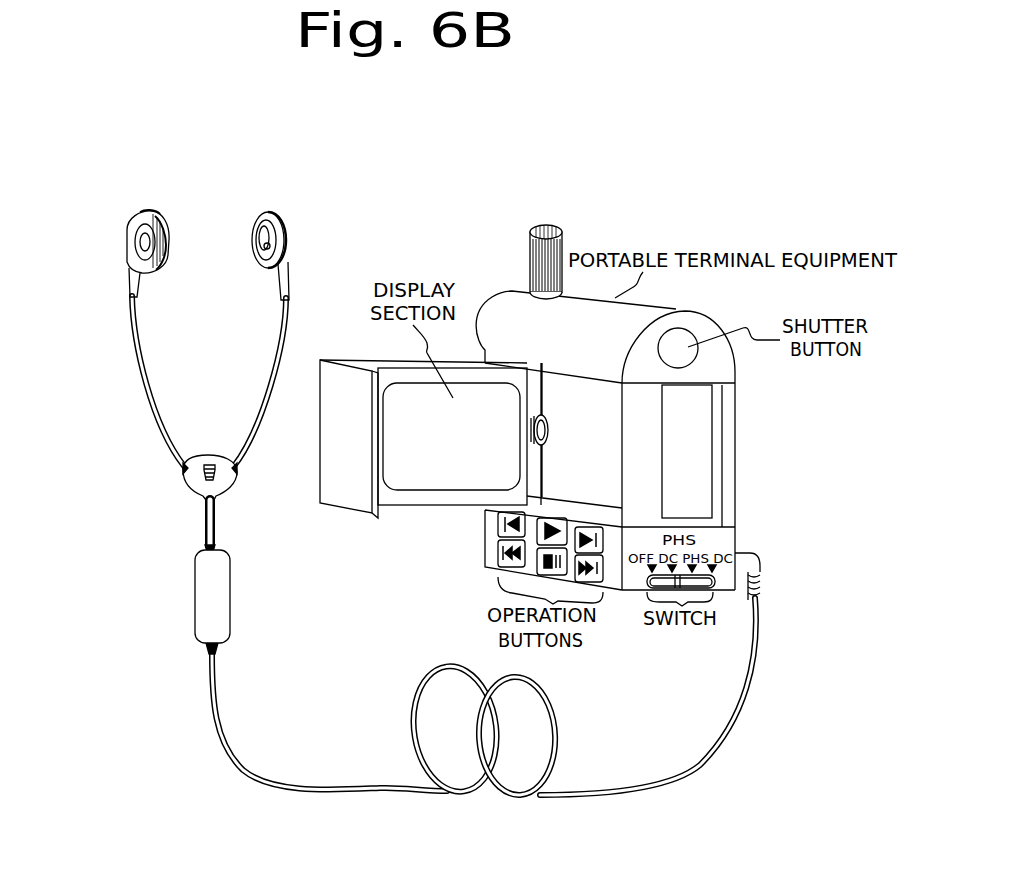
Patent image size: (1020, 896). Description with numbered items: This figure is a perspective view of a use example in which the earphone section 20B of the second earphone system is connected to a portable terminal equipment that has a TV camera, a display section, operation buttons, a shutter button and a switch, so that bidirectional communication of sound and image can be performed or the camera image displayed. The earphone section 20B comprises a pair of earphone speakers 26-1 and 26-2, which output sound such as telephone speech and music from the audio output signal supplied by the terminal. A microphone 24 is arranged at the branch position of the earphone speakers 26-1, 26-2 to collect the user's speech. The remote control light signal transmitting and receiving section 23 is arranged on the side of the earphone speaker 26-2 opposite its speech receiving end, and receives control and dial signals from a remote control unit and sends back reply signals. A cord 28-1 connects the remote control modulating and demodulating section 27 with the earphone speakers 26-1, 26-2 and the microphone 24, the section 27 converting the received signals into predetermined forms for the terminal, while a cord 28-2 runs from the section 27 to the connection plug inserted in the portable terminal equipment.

The remote control light signal transmitting and receiving section 23 is at (143, 213).
The earphone speaker 26-1 is at (280, 222).
The earphone speaker 26-2 is at (165, 255).
The microphone 24 is at (217, 474).
The earphone section 20B is at (221, 403).
The cord 28-1 is at (214, 537).
The remote control modulating and demodulating section 27 is at (203, 592).
The cord 28-2 is at (733, 719).